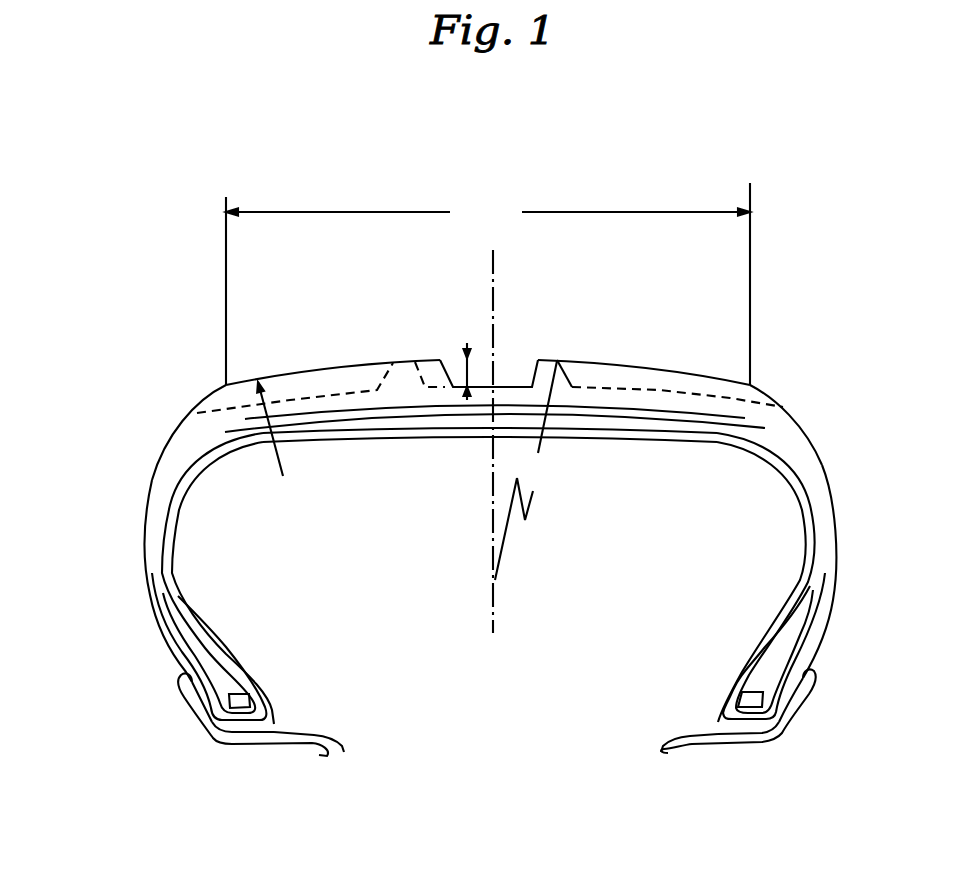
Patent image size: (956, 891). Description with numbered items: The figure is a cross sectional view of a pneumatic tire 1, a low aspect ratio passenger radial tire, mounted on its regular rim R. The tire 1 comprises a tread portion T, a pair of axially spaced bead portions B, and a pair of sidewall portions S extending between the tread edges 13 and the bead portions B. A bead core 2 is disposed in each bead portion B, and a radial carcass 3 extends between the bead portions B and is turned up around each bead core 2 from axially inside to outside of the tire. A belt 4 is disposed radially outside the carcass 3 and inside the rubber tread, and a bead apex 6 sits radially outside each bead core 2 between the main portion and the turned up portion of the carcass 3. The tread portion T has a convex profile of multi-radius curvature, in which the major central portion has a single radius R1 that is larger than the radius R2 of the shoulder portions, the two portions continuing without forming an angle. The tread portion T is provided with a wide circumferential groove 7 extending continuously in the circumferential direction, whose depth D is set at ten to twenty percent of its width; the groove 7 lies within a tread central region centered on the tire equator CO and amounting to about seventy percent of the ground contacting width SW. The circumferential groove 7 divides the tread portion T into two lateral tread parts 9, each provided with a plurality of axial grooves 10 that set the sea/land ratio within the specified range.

The tire 1 is at (778, 268).
The bead core 2 is at (240, 705).
The radial carcass 3 is at (165, 516).
The belt 4 is at (772, 423).
The bead apex 6 is at (218, 662).
The circumferential groove 7 is at (503, 368).
The lateral tread part 9 is at (305, 368).
The axial groove 10 is at (660, 390).
The tread edge 13 is at (226, 385).
The tread portion T is at (343, 327).
The sidewall portion S is at (108, 557).
The bead portion B is at (292, 697).
The regular rim R is at (271, 742).
The ground contacting width SW is at (488, 284).
The tire equator CO is at (495, 278).
The groove depth D is at (479, 362).
The radius of the tread central portion R1 is at (526, 470).
The radius of the shoulder portions R2 is at (278, 444).